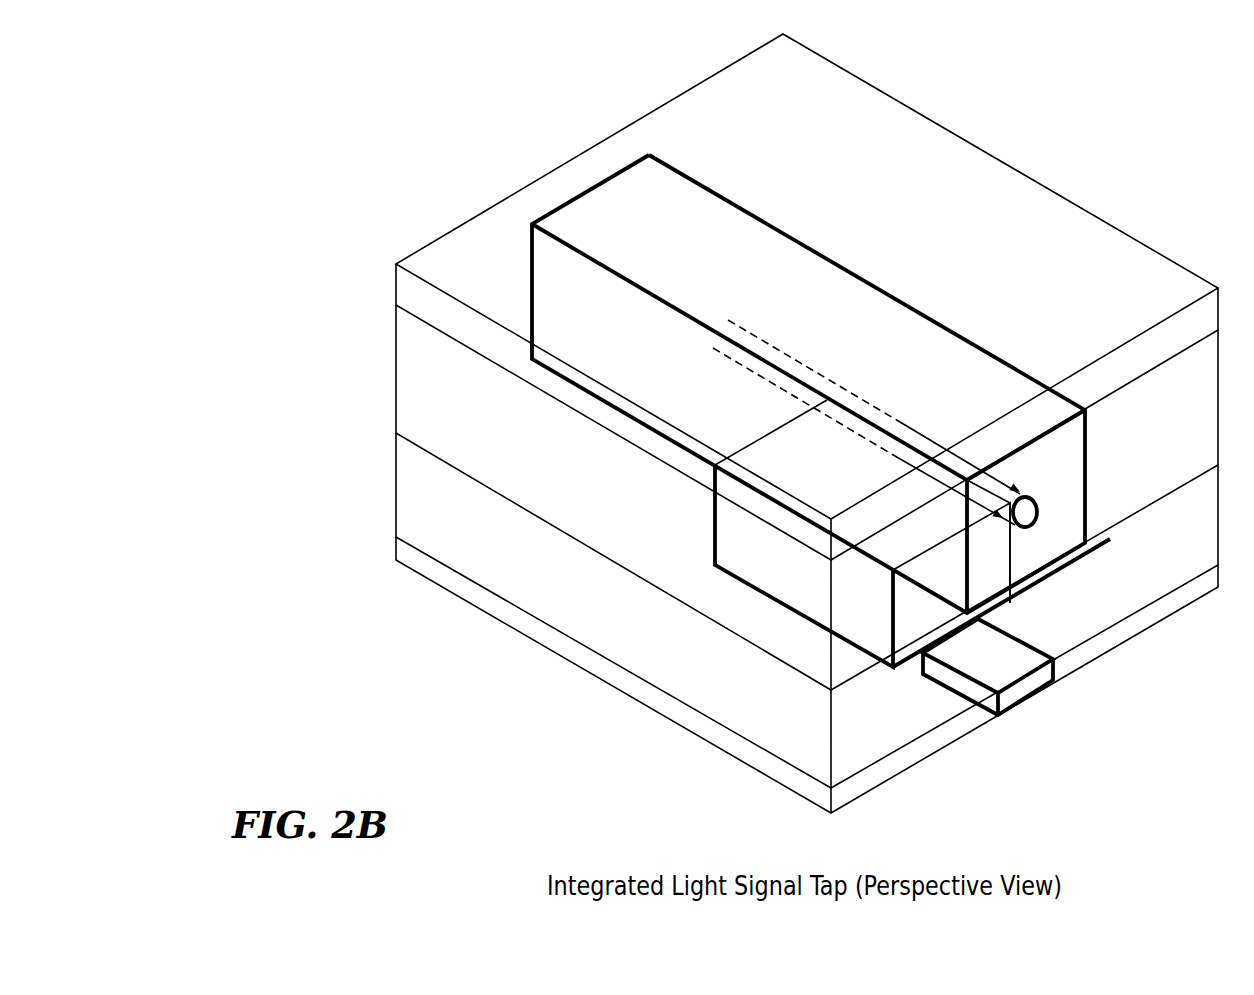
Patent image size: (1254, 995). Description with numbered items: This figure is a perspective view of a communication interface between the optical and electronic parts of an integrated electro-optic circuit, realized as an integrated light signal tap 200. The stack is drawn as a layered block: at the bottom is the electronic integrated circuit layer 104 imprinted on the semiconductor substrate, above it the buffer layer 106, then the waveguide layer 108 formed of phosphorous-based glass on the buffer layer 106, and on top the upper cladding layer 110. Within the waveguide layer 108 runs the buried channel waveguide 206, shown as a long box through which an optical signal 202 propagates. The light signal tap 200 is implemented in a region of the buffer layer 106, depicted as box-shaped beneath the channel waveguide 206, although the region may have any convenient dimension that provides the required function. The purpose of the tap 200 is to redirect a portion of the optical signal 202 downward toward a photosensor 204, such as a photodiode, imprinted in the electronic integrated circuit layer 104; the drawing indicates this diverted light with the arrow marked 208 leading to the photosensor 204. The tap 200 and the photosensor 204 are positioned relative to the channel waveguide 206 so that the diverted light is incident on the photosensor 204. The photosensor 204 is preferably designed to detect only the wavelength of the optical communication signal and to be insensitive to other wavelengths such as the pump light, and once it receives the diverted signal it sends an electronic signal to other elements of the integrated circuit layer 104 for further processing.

The electronic integrated circuit layer 104 is at (463, 593).
The buffer layer 106 is at (463, 518).
The waveguide layer 108 is at (463, 390).
The cladding layer 110 is at (463, 250).
The integrated light signal tap 200 is at (785, 577).
The optical signal 202 is at (1023, 655).
The photosensor 204 is at (1030, 688).
The buried channel waveguide 206 is at (600, 213).
The tapped light signal 208 is at (1021, 631).